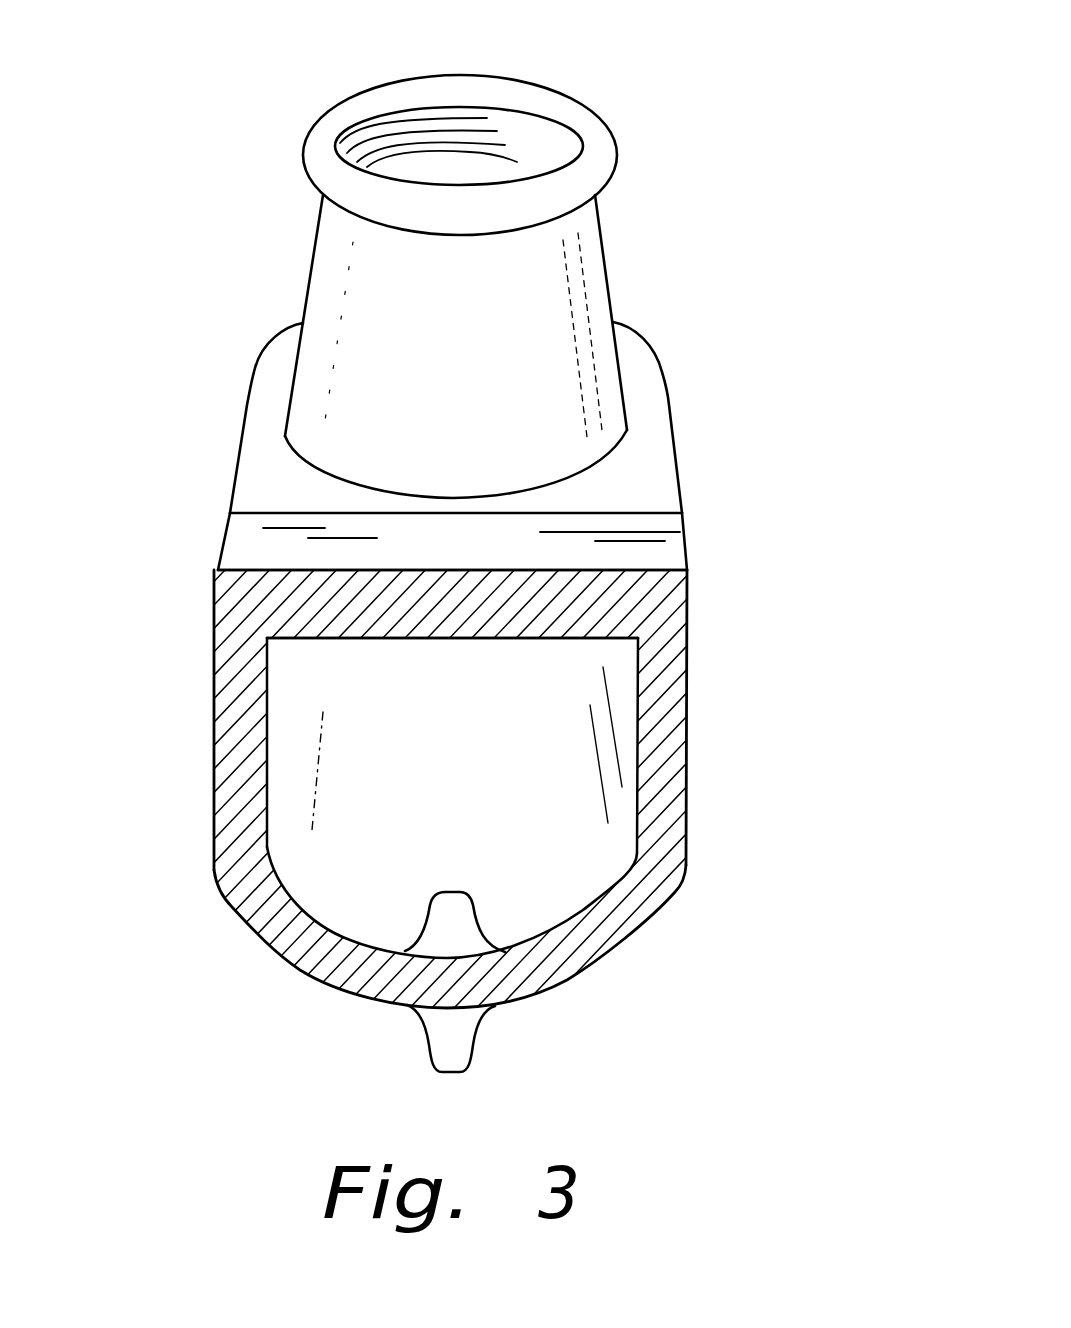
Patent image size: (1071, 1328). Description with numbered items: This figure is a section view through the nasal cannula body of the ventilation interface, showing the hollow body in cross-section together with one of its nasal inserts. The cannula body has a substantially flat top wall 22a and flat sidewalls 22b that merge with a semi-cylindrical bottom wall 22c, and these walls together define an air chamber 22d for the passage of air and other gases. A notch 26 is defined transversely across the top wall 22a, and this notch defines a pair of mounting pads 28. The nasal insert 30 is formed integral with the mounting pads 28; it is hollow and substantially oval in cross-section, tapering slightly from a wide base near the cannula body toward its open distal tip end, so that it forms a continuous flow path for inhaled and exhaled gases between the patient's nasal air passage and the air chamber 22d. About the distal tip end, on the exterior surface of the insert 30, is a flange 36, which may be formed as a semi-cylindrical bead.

The flange 36 is at (590, 105).
The nasal inserts 30 is at (527, 268).
The mounting pads 28 is at (655, 428).
The notch 26 is at (655, 557).
The sidewalls 22b is at (215, 725).
The top wall 22a is at (448, 613).
The bottom wall 22c is at (308, 978).
The air chamber 22d is at (551, 890).